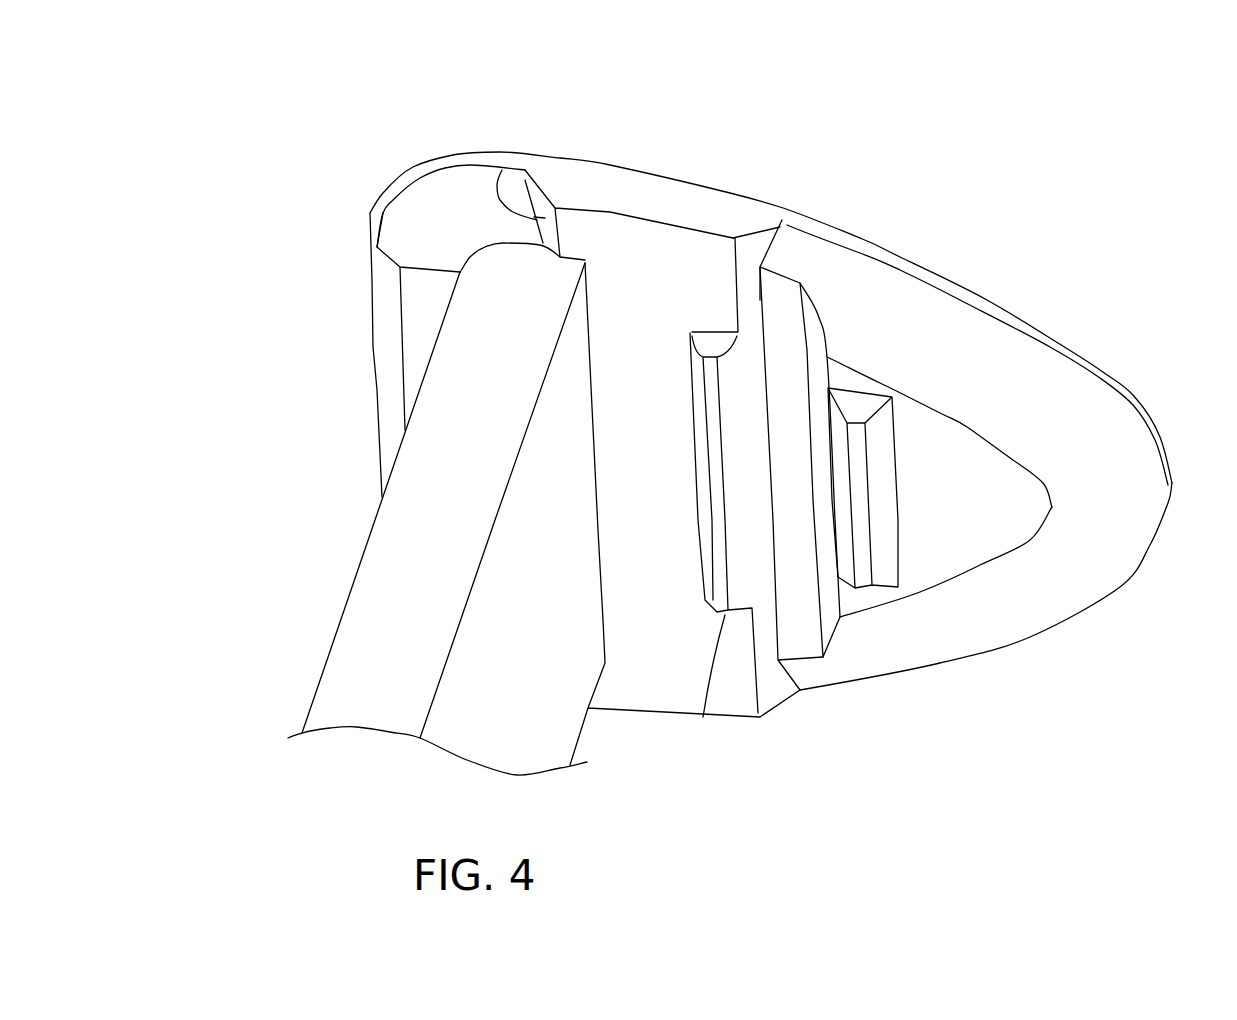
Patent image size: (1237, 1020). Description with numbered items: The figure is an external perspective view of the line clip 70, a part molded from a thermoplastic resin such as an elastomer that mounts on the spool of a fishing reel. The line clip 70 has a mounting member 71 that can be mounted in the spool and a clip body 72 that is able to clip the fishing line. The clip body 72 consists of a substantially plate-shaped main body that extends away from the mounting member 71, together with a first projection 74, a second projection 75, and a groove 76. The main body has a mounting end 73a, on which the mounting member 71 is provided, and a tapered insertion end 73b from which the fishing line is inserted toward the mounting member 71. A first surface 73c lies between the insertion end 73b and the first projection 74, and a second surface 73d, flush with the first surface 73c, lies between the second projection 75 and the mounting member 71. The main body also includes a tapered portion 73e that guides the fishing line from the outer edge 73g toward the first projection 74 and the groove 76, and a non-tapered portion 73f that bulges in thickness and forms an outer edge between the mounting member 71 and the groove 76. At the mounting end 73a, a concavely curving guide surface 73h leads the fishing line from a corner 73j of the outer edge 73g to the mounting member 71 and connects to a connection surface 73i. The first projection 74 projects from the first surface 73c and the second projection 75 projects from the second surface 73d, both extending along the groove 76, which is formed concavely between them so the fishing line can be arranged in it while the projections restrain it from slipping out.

The line clip 70 is at (884, 149).
The mounting member 71 is at (330, 602).
The clip body 72 is at (1013, 282).
The mounting end 73a is at (380, 338).
The insertion end 73b is at (1130, 397).
The first surface 73c is at (1003, 522).
The second surface 73d is at (652, 655).
The tapered portion 73e is at (1043, 378).
The non-tapered portion 73f is at (650, 190).
The outer edge 73g is at (928, 273).
The guide surface 73h is at (435, 200).
The connection surface 73i is at (502, 170).
The corner 73j is at (377, 213).
The first projection 74 is at (865, 563).
The second projection 75 is at (727, 620).
The groove 76 is at (782, 303).